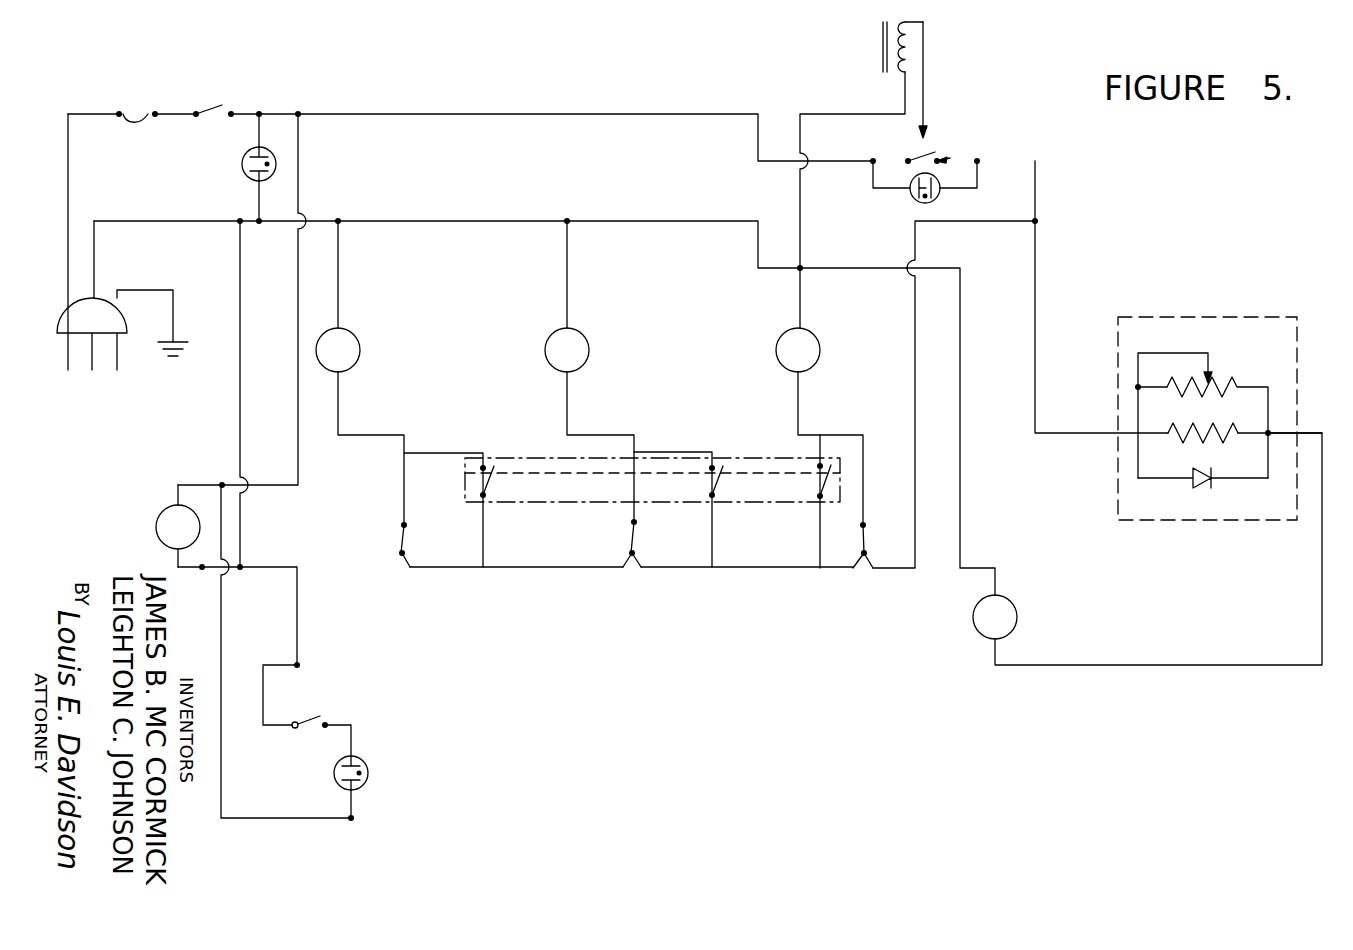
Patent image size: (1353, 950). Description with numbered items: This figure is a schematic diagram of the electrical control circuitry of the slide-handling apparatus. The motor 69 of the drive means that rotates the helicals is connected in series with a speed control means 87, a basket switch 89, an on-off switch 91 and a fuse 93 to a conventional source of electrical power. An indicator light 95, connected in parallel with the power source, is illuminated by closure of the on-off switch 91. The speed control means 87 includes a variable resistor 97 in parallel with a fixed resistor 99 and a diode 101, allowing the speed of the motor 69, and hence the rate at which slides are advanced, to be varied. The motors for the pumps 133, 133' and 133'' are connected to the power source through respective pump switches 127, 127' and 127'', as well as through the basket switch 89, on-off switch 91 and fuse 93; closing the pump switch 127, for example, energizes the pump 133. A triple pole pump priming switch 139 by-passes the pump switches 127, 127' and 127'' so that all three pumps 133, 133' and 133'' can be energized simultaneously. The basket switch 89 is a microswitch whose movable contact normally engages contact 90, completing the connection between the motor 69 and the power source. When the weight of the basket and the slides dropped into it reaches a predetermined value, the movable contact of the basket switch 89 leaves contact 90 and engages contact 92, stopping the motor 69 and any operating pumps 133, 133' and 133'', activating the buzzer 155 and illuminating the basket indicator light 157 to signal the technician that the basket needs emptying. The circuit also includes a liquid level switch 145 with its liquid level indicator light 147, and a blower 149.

The fuse 93 is at (120, 113).
The on-off switch 91 is at (222, 105).
The indicator light 95 is at (242, 162).
The buzzer 155 is at (883, 42).
The contact 92 is at (928, 135).
The basket switch 89 is at (935, 152).
The contact 90 is at (948, 159).
The basket indicator light 157 is at (940, 197).
The pump 133'' is at (379, 347).
The pump 133' is at (606, 350).
The pump 133 is at (831, 346).
The triple pole pump priming switch 139 is at (570, 475).
The pump switch 127'' is at (439, 543).
The pump switch 127' is at (664, 543).
The pump switch 127 is at (883, 535).
The blower 149 is at (162, 512).
The liquid level switch 145 is at (312, 720).
The liquid level indicator light 147 is at (366, 762).
The motor 69 is at (1018, 612).
The speed control means 87 is at (1298, 383).
The variable resistor 97 is at (1228, 383).
The fixed resistor 99 is at (1225, 431).
The diode 101 is at (1212, 470).